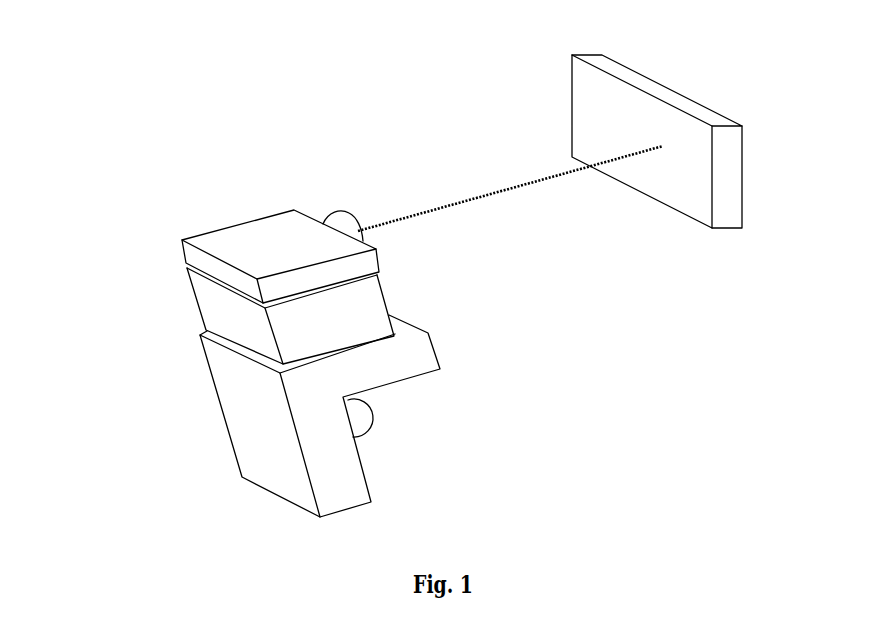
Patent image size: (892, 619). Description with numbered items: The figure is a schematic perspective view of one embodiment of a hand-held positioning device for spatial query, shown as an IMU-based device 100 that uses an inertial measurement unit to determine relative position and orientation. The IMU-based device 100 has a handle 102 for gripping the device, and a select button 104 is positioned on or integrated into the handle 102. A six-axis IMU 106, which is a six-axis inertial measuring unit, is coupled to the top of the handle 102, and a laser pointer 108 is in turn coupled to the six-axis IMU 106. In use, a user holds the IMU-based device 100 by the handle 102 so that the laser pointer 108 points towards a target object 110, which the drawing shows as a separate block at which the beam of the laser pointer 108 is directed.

The IMU-based device 100 is at (82, 58).
The handle 102 is at (358, 491).
The select button 104 is at (372, 415).
The six-axis IMU 106 is at (373, 305).
The laser pointer 108 is at (303, 223).
The target object 110 is at (585, 102).